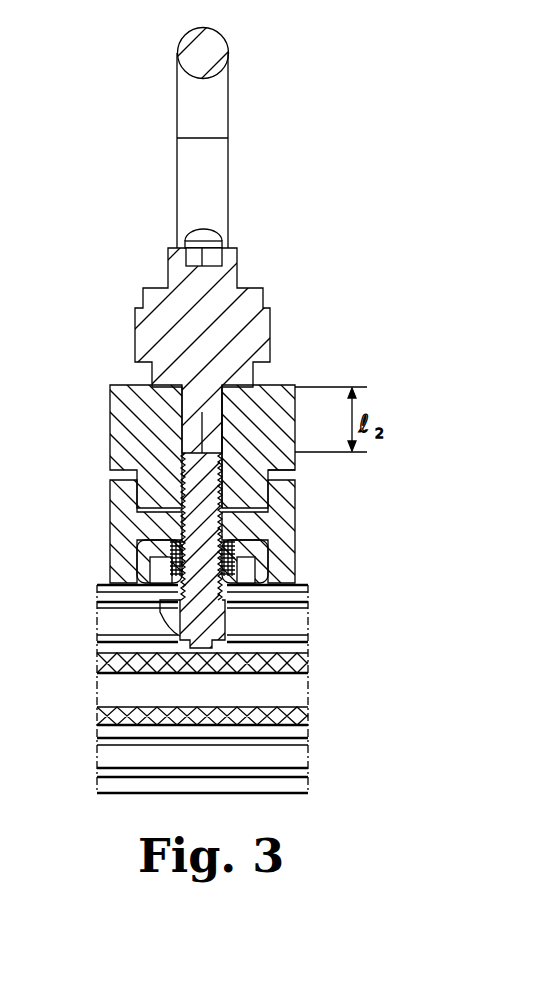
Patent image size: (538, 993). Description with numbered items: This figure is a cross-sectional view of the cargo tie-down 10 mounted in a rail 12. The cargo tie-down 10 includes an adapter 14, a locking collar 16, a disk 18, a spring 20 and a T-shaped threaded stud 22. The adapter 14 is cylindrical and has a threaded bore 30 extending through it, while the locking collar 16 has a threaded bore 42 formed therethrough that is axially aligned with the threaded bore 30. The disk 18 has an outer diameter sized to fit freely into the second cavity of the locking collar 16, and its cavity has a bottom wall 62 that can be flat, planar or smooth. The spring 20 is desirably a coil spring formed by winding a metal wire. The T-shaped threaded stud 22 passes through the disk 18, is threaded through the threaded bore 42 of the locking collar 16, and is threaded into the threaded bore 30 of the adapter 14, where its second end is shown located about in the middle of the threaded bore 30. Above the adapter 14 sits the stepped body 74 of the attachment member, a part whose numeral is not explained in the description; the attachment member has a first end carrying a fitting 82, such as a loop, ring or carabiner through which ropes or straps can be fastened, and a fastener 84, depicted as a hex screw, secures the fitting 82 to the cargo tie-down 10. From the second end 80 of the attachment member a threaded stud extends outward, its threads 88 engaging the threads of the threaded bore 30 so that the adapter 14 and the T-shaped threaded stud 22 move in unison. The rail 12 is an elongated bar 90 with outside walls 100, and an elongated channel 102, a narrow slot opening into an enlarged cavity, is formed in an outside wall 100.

The cargo tie-down 10 is at (305, 125).
The rail 12 is at (314, 603).
The adapter 14 is at (298, 418).
The locking collar 16 is at (297, 528).
The disk 18 is at (258, 580).
The spring 20 is at (262, 566).
The T-shaped threaded stud 22 is at (205, 478).
The threaded bore 30 is at (235, 503).
The threaded bore 42 is at (178, 530).
The bottom wall 62 is at (152, 570).
The stepped stud body 74 is at (266, 285).
The second end 80 is at (296, 462).
The fitting 82 is at (213, 43).
The fastener 84 is at (185, 233).
The threads 88 is at (220, 232).
The elongated bar 90 is at (283, 795).
The outside wall 100 is at (100, 586).
The elongated channel 102 is at (316, 692).